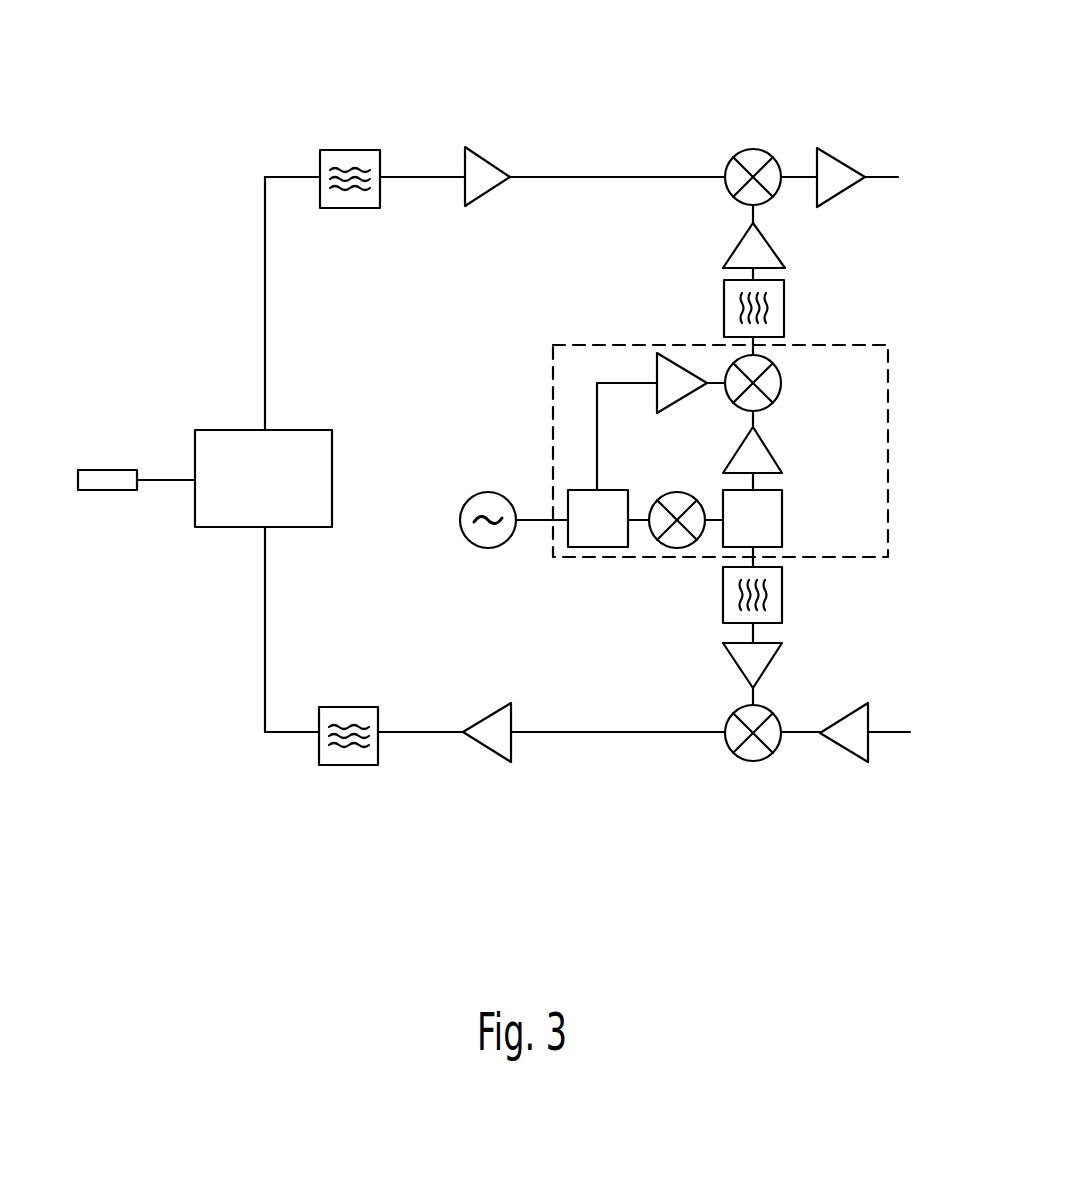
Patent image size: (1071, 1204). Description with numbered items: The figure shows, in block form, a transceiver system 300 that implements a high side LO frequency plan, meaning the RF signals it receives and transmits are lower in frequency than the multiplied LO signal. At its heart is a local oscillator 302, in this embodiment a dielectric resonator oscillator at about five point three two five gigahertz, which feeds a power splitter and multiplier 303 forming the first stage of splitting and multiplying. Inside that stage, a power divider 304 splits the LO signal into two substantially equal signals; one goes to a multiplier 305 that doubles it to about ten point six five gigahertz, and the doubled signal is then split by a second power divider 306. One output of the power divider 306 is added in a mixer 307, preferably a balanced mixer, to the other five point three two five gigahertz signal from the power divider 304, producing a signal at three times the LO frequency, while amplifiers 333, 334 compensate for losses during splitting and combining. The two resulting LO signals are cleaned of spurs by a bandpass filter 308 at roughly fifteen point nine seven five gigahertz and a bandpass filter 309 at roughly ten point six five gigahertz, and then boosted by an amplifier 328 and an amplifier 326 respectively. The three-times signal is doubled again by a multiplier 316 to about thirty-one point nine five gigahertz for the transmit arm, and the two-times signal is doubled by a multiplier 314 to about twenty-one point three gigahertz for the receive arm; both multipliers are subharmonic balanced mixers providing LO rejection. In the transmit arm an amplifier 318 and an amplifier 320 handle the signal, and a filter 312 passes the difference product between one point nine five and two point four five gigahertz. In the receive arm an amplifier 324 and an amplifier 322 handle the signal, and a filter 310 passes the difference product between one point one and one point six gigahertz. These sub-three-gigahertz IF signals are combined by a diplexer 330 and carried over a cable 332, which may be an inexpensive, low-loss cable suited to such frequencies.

The transceiver system 300 is at (292, 62).
The local oscillator 302 is at (480, 492).
The power splitter and multiplier 303 is at (552, 400).
The power divider 304 is at (610, 490).
The multiplier 305 is at (690, 495).
The power divider 306 is at (782, 542).
The mixer 307 is at (770, 405).
The filter 308 is at (724, 300).
The filter 309 is at (782, 615).
The filter 310 is at (367, 707).
The filter 312 is at (357, 150).
The multiplier 314 is at (733, 710).
The multiplier 316 is at (738, 152).
The amplifier 318 is at (487, 160).
The amplifier 320 is at (838, 150).
The amplifier 322 is at (493, 705).
The amplifier 324 is at (852, 762).
The amplifier 326 is at (770, 668).
The amplifier 328 is at (740, 245).
The diplexer 330 is at (312, 430).
The cable 332 is at (97, 492).
The amplifier 333 is at (775, 460).
The amplifier 334 is at (687, 393).